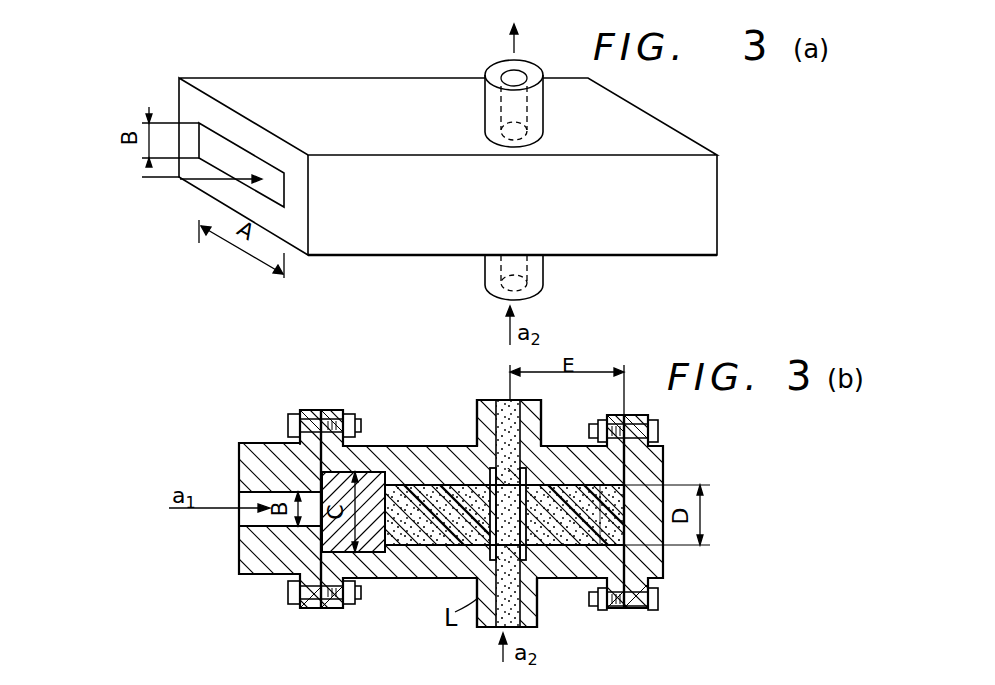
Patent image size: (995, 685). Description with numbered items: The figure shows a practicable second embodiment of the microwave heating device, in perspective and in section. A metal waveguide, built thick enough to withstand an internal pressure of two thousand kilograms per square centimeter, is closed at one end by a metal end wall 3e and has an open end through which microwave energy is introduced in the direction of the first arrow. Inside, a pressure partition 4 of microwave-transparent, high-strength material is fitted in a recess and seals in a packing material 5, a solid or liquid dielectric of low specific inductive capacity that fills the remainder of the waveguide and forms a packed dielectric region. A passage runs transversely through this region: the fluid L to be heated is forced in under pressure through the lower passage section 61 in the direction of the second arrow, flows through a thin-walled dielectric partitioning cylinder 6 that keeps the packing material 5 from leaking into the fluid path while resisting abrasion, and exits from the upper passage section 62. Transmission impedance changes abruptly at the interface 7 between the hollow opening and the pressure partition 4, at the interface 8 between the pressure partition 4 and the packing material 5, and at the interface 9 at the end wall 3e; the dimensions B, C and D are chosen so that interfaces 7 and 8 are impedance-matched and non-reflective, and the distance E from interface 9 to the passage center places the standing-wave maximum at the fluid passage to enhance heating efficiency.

The end wall 3e is at (665, 475).
The pressure partition 4 is at (368, 475).
The packing material 5 is at (450, 487).
The partitioning cylinder 6 is at (537, 503).
The interface 7 is at (307, 530).
The interface 8 is at (392, 515).
The interface 9 is at (615, 523).
The passage section 61 is at (500, 593).
The passage section 62 is at (502, 413).